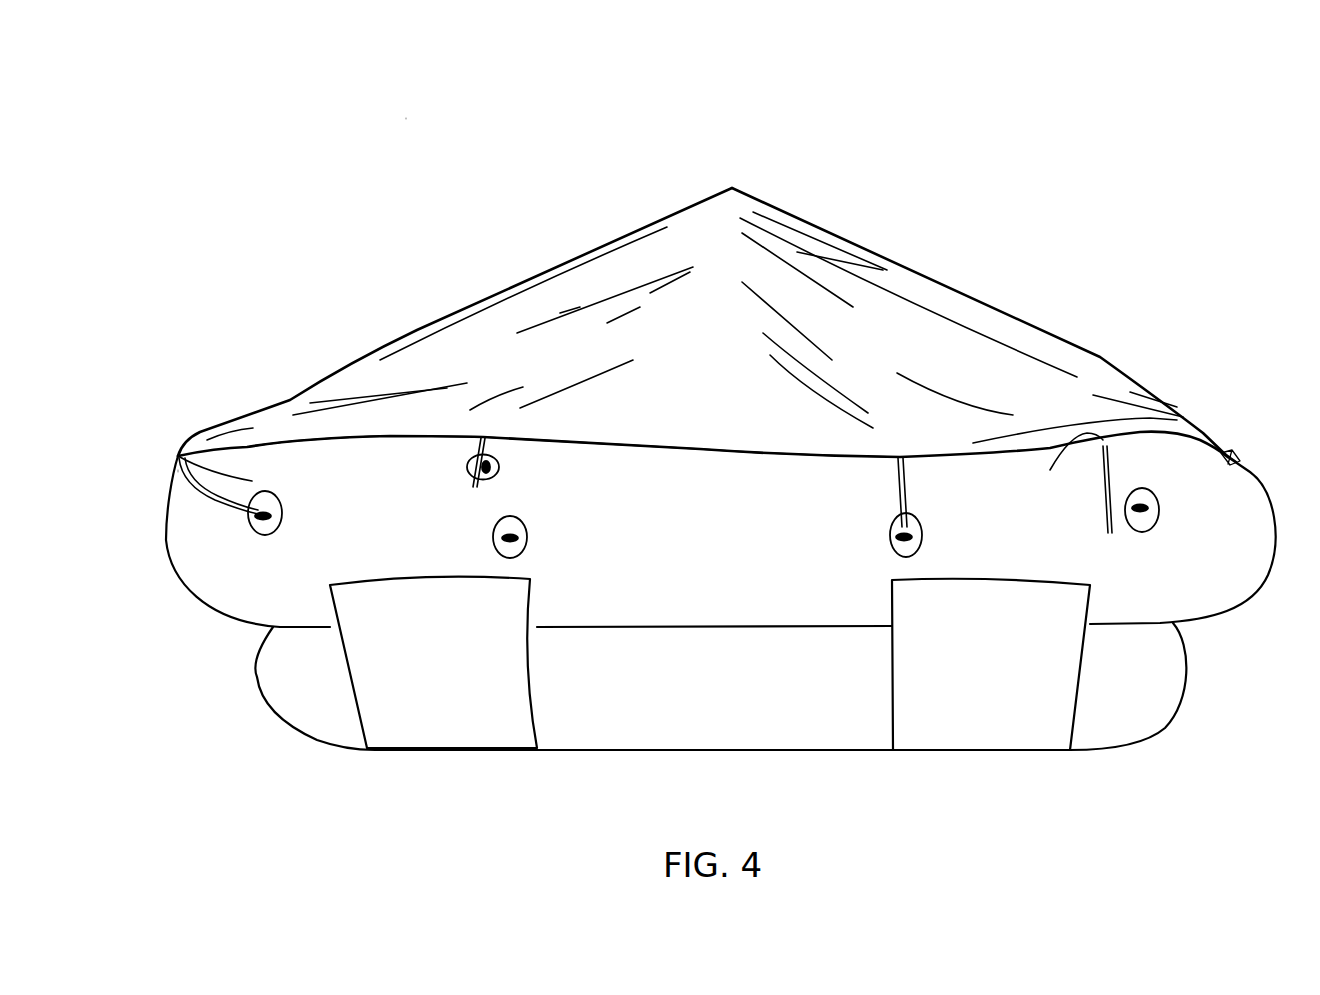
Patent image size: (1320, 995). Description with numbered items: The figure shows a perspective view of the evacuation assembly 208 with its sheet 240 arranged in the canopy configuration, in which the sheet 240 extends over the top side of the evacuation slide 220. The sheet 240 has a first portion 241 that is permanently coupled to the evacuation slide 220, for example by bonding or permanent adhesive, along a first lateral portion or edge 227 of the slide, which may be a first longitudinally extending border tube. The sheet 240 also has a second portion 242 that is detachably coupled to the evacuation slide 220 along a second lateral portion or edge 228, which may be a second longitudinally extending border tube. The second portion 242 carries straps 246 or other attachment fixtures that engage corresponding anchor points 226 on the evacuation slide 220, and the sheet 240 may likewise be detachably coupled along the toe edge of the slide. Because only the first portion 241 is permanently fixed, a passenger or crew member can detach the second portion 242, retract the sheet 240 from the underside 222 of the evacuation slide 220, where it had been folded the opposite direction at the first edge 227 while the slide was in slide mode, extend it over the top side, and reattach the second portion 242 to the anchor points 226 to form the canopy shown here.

The evacuation assembly 208 is at (407, 110).
The sheet 240 is at (605, 276).
The first portion 241 is at (1204, 433).
The second portion 242 is at (193, 445).
The straps 246 is at (183, 490).
The anchor points 226 is at (283, 510).
The first lateral portion/edge 227 is at (1237, 487).
The second lateral portion/edge 228 is at (177, 510).
The evacuation slide 220 is at (717, 597).
The underside 222 is at (602, 794).